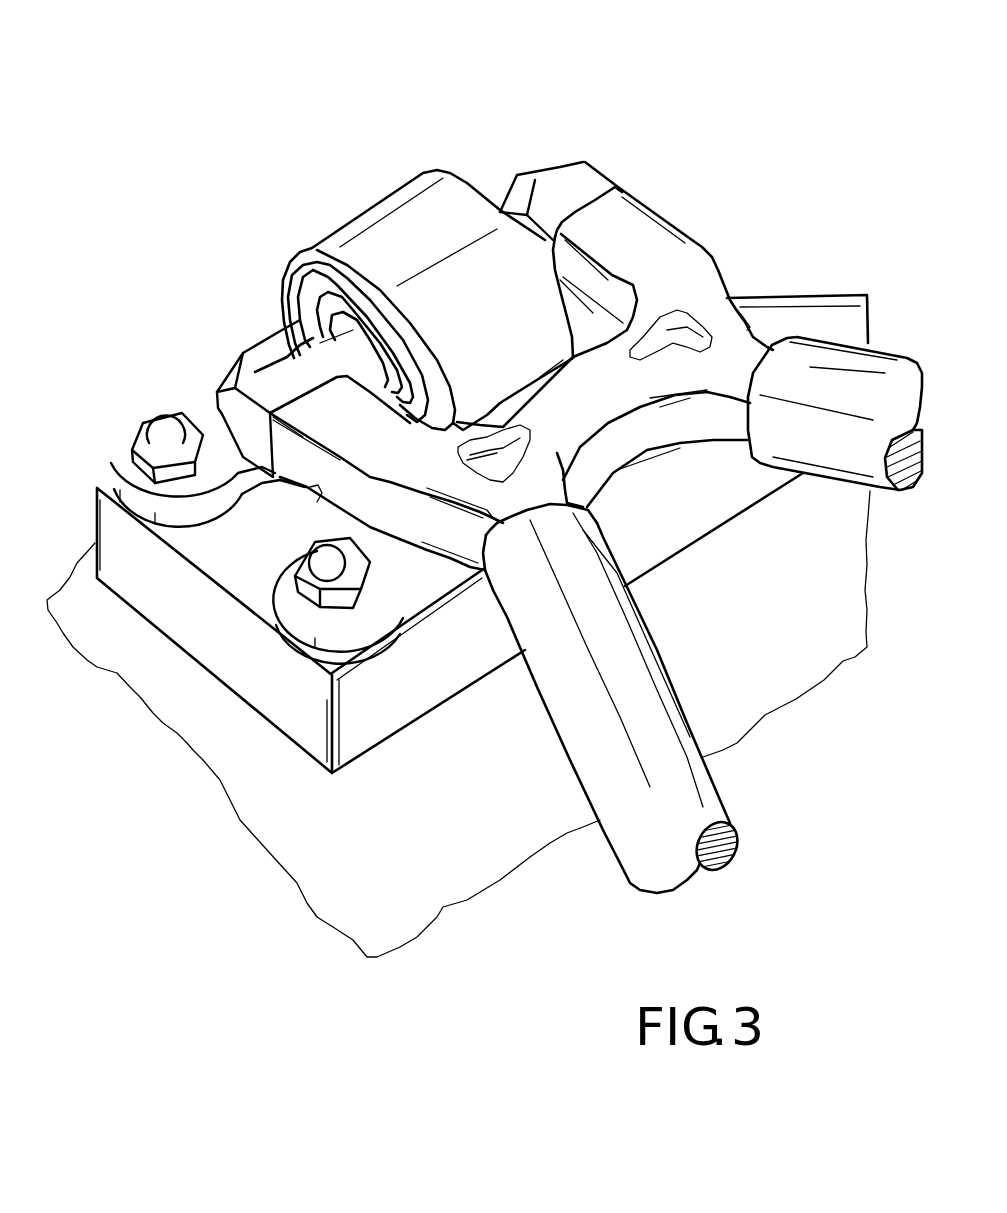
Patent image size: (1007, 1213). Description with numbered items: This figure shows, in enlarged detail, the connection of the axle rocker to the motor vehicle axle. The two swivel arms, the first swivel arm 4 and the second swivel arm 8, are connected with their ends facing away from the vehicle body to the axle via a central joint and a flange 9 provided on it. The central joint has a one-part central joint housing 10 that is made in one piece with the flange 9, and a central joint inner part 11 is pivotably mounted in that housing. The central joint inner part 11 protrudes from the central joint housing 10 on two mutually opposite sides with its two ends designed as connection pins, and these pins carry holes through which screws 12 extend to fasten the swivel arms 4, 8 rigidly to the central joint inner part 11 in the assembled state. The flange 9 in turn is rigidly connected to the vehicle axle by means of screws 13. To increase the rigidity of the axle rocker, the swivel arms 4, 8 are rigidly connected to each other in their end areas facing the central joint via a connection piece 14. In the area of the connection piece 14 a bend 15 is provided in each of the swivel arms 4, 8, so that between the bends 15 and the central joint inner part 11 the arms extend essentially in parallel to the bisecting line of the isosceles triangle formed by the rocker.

The first swivel arm 4 is at (812, 368).
The second swivel arm 8 is at (651, 711).
The flange 9 is at (383, 590).
The central joint housing 10 is at (377, 240).
The central joint inner part 11 is at (250, 415).
The screws 12 is at (517, 178).
The screws 13 is at (158, 440).
The connection piece 14 is at (629, 439).
The bend 15 is at (758, 317).